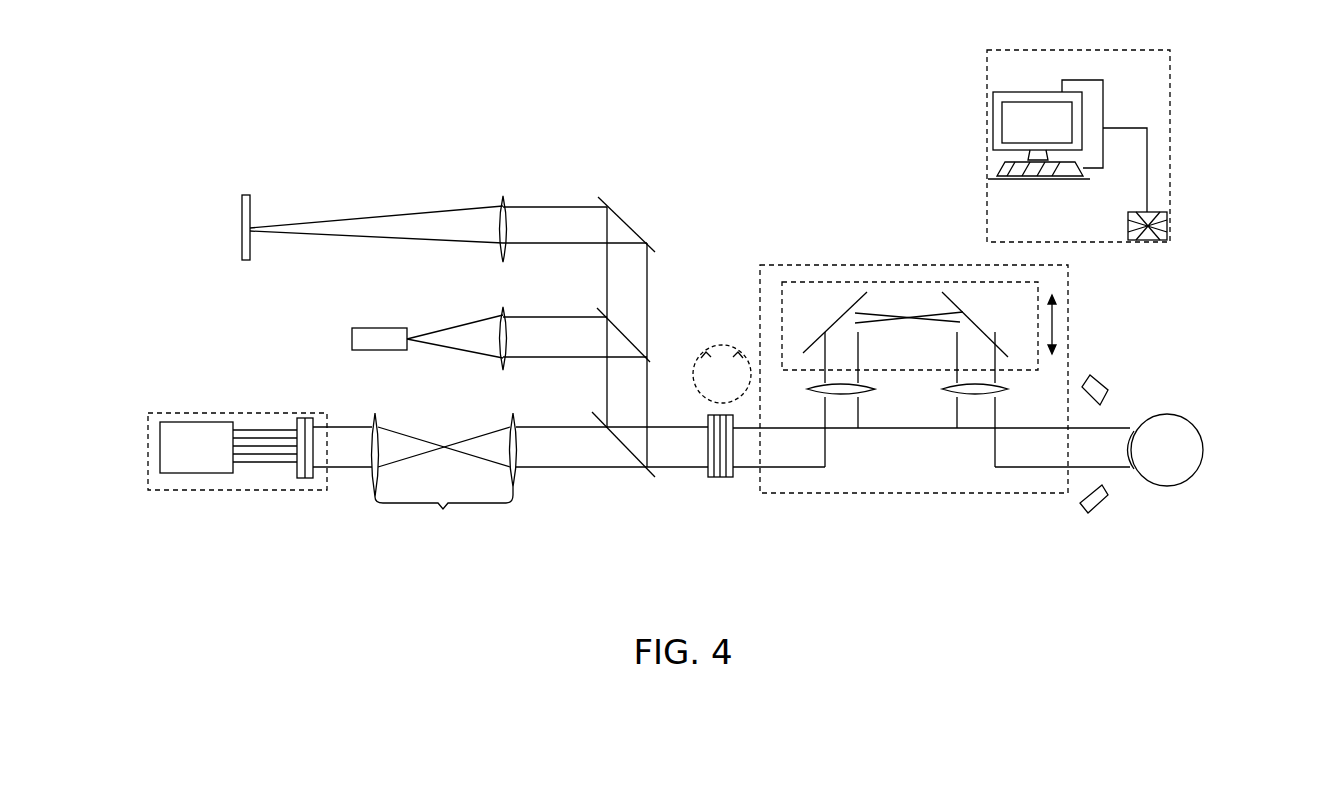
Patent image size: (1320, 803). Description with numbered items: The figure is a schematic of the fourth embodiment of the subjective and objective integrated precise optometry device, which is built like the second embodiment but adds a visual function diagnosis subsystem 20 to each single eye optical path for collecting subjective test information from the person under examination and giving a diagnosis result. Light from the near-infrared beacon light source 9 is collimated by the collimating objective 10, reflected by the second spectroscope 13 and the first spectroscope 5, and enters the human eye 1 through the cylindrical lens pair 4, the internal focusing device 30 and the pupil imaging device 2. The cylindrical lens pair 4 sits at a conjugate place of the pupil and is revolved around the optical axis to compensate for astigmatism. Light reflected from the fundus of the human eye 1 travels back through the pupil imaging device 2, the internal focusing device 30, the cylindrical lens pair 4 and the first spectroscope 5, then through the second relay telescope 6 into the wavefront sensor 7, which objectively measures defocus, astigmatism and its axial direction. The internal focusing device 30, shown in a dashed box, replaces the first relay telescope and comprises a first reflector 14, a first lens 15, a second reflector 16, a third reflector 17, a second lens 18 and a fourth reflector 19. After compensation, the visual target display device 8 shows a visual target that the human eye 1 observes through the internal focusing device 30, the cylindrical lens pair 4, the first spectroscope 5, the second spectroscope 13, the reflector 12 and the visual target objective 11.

The human eye 1 is at (1197, 399).
The pupil imaging device 2 is at (1116, 357).
The cylindrical lens pair 4 is at (746, 453).
The first spectroscope 5 is at (621, 487).
The second relay telescope 6 is at (444, 480).
The wavefront sensor 7 is at (228, 389).
The visual target display device 8 is at (179, 186).
The near-infrared beacon light source 9 is at (302, 231).
The collimating objective 10 is at (389, 241).
The visual target objective 11 is at (436, 187).
The reflector 12 is at (607, 182).
The second spectroscope 13 is at (688, 237).
The first reflector 14 is at (862, 427).
The first lens 15 is at (875, 389).
The second reflector 16 is at (835, 322).
The third reflector 17 is at (975, 324).
The second lens 18 is at (1008, 389).
The fourth reflector 19 is at (947, 423).
The visual function diagnosis subsystem 20 is at (1117, 137).
The internal focusing device 30 is at (914, 413).